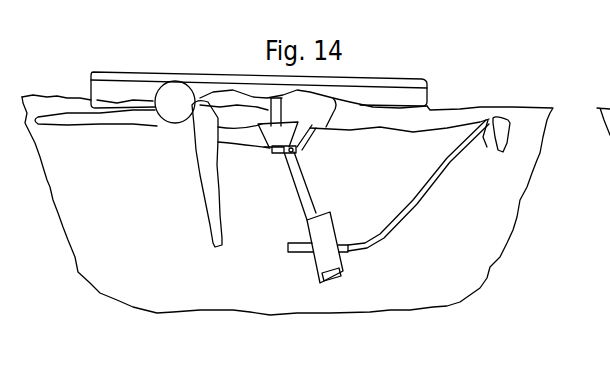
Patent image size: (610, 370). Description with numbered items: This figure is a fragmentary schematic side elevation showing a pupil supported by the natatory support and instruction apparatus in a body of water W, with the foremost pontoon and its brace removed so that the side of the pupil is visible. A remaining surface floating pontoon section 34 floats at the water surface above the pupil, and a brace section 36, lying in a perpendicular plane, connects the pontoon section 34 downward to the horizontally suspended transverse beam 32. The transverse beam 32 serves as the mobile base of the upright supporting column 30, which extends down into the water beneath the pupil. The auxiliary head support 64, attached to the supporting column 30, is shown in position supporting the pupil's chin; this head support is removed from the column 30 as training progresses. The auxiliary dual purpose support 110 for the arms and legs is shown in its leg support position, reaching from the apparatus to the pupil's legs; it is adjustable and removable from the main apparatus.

The surface floating pontoon sections 34 is at (159, 68).
The auxiliary head support 64 is at (186, 133).
The brace sections 36 is at (302, 148).
The upright supporting column 30 is at (312, 192).
The horizontally suspended transverse beam 32 is at (343, 278).
The dual purpose support 110 is at (432, 196).
The body of water W is at (434, 296).